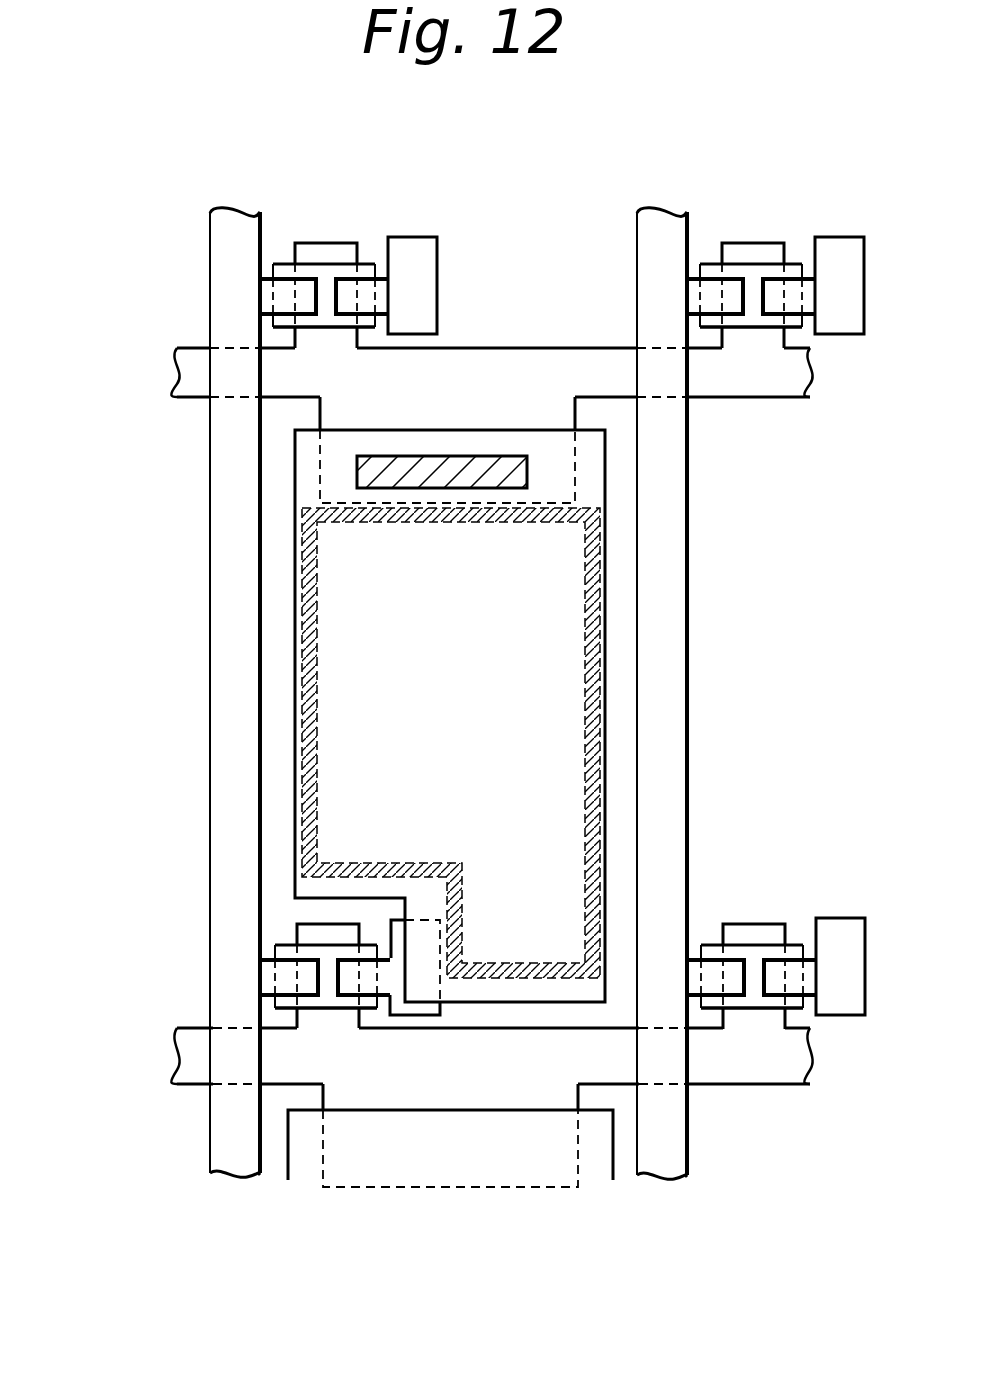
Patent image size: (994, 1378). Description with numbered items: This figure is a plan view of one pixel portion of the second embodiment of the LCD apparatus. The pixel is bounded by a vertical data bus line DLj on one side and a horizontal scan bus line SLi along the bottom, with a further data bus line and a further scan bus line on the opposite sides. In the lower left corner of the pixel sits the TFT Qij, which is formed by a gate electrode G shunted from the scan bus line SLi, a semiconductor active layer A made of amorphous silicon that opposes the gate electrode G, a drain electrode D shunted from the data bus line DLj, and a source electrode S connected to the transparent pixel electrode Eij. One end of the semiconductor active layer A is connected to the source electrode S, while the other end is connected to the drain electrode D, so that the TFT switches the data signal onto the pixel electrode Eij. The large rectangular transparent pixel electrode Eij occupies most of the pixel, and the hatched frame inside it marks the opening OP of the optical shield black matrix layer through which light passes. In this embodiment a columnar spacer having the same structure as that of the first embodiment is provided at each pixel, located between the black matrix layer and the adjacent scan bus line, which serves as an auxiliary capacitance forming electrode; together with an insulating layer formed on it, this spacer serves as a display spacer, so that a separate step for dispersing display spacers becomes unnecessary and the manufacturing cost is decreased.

The data bus line DLj is at (238, 1155).
The scan bus line SLi is at (197, 1056).
The transparent pixel electrode Eij is at (605, 484).
The opening OP is at (598, 568).
The TFT Qij is at (138, 721).
The semiconductor active layer A is at (287, 1006).
The gate electrode G is at (326, 936).
The drain electrode D is at (288, 957).
The source electrode S is at (391, 918).